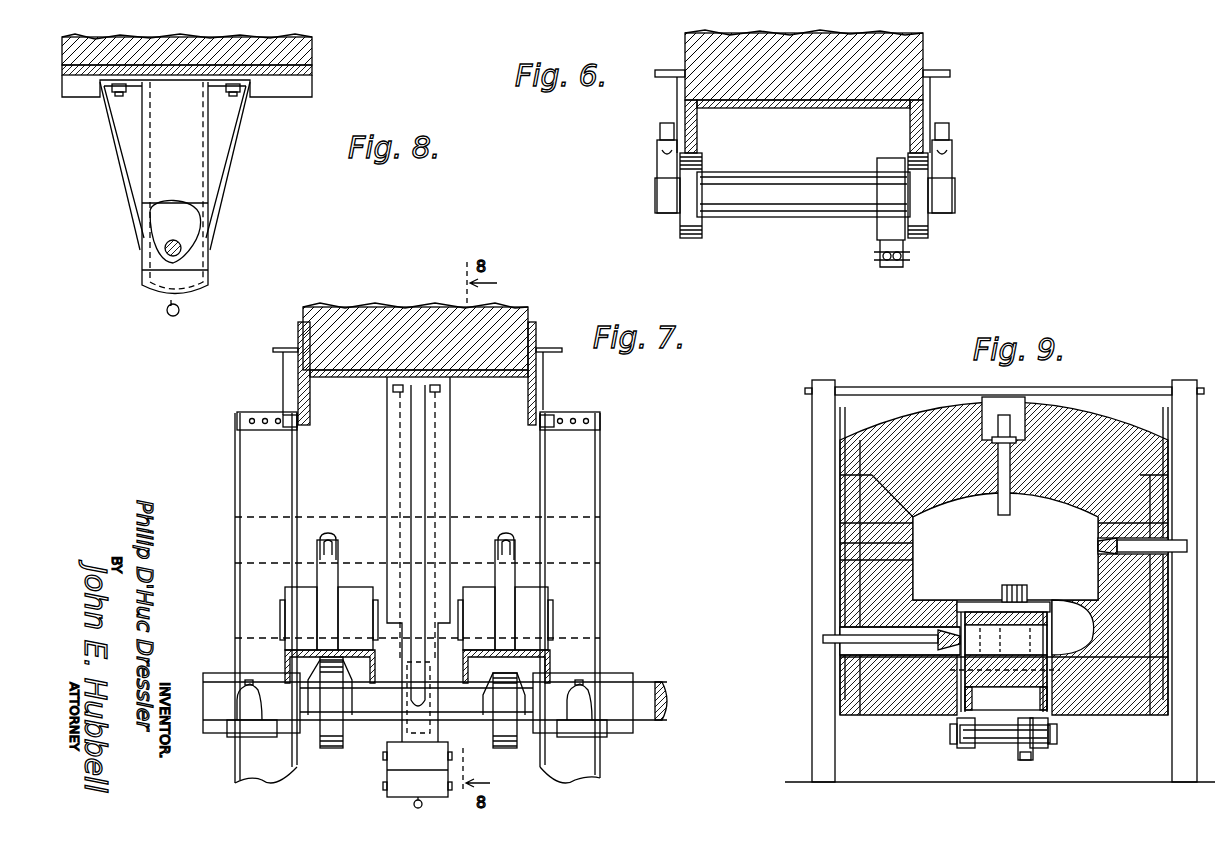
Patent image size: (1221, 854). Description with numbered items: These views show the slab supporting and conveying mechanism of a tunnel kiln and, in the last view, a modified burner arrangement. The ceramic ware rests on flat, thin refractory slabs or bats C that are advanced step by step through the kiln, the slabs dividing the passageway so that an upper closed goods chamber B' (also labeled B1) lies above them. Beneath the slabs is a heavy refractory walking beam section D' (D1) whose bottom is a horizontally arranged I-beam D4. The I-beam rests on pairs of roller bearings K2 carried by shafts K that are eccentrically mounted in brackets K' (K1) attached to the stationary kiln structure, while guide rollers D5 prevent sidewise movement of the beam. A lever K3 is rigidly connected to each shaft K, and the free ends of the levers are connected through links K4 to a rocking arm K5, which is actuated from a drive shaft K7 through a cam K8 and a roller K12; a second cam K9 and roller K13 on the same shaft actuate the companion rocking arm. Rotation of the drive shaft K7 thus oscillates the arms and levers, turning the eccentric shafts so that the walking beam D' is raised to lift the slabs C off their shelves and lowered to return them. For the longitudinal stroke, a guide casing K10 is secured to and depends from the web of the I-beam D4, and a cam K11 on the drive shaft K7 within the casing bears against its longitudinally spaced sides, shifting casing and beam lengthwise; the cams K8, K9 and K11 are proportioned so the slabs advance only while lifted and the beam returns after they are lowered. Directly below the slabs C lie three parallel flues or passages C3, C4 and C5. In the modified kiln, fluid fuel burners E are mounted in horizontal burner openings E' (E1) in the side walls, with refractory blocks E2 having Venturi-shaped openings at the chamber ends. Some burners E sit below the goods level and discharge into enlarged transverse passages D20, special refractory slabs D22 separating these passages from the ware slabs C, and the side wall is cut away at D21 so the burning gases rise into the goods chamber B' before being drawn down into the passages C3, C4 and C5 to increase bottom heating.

In FIG. 8, the walking beam section D' is at (212, 49).
In FIG. 6, the walking beam section D' is at (828, 65).
In FIG. 7, the walking beam section D' is at (436, 335).
In FIG. 8, the walking beam section D1 is at (292, 53).
In FIG. 6, the walking beam section D1 is at (893, 58).
In FIG. 7, the walking beam section D1 is at (495, 331).
In FIG. 9, the walking beam section D1 is at (1005, 698).
In FIG. 8, the I-beam D4 is at (268, 96).
In FIG. 6, the I-beam D4 is at (812, 109).
In FIG. 7, the I-beam D4 is at (487, 378).
In FIG. 7, the guide rollers D5 is at (280, 413).
In FIG. 6, the shafts K is at (803, 179).
In FIG. 9, the shafts K is at (1005, 753).
In FIG. 6, the brackets K' is at (780, 168).
In FIG. 6, the brackets K1 is at (660, 166).
In FIG. 6, the roller bearings K2 is at (700, 240).
In FIG. 9, the roller bearings K2 is at (965, 748).
In FIG. 6, the lever K3 is at (878, 226).
In FIG. 9, the lever K3 is at (1036, 752).
In FIG. 6, the links K4 is at (888, 266).
In FIG. 7, the links K4 is at (330, 530).
In FIG. 7, the rocking arm K5 is at (325, 578).
In FIG. 8, the drive shaft K7 is at (181, 249).
In FIG. 7, the drive shaft K7 is at (651, 692).
In FIG. 7, the cam K8 is at (512, 748).
In FIG. 7, the cam K9 is at (325, 750).
In FIG. 8, the guide casing K10 is at (195, 168).
In FIG. 7, the guide casing K10 is at (410, 750).
In FIG. 8, the cam K11 is at (190, 232).
In FIG. 7, the cam K11 is at (405, 730).
In FIG. 7, the roller K12 is at (505, 715).
In FIG. 7, the roller K13 is at (342, 730).
In FIG. 9, the goods chamber B' is at (1004, 556).
In FIG. 9, the goods chamber B1 is at (1004, 556).
In FIG. 9, the slabs C is at (972, 606).
In FIG. 9, the flue C3 is at (952, 606).
In FIG. 9, the flue C4 is at (1040, 702).
In FIG. 9, the flue C5 is at (1047, 652).
In FIG. 9, the transverse passages D20 is at (1040, 640).
In FIG. 9, the cut-away portion D21 is at (1056, 641).
In FIG. 9, the refractory slabs D22 is at (1000, 604).
In FIG. 9, the fluid fuel burners E is at (981, 591).
In FIG. 9, the burner openings E' is at (959, 592).
In FIG. 9, the burner openings E1 is at (868, 546).
In FIG. 9, the refractory blocks E2 is at (935, 706).